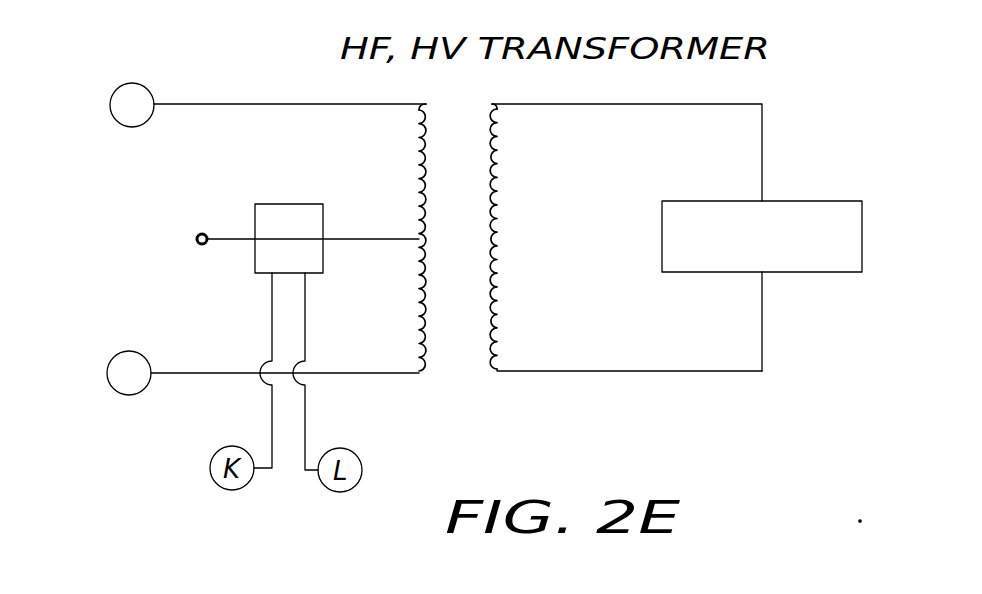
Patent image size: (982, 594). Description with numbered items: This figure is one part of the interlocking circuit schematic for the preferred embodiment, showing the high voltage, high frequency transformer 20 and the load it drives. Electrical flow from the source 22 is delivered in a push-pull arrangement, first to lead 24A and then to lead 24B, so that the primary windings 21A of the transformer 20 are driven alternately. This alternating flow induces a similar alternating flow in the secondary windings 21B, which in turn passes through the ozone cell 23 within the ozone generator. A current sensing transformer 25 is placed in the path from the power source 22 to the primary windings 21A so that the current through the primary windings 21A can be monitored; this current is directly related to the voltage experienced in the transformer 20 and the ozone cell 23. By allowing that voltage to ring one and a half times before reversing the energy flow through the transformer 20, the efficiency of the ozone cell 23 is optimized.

The transformer 20 is at (479, 221).
The primary windings 21A is at (422, 373).
The secondary windings 21B is at (492, 372).
The source 22 is at (198, 247).
The ozone cell 23 is at (822, 200).
The lead 24A is at (133, 83).
The lead 24B is at (141, 395).
The current sensing transformer 25 is at (323, 258).